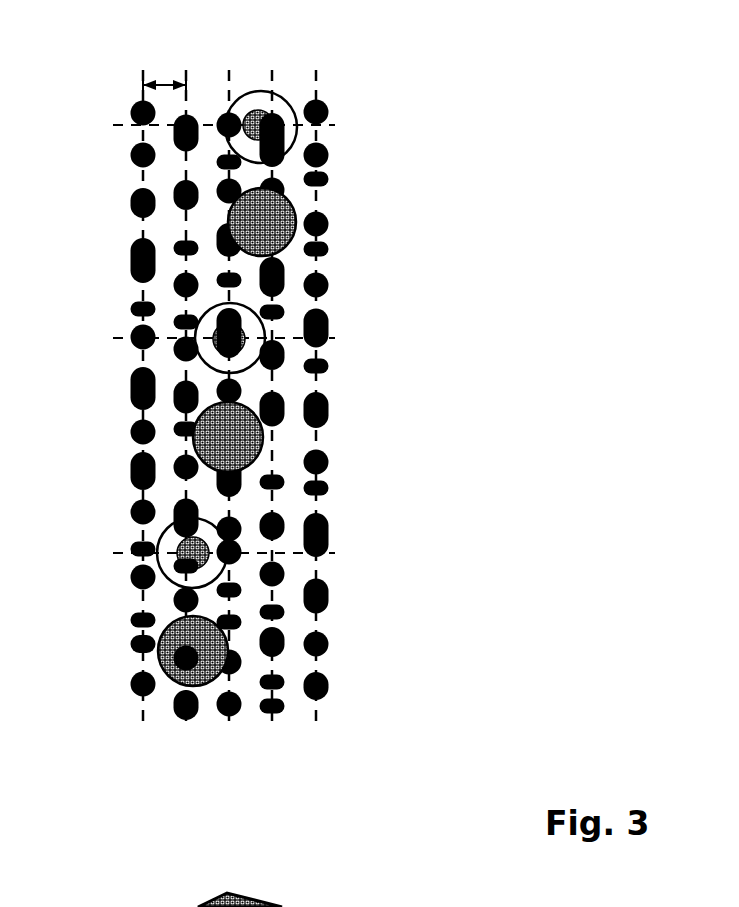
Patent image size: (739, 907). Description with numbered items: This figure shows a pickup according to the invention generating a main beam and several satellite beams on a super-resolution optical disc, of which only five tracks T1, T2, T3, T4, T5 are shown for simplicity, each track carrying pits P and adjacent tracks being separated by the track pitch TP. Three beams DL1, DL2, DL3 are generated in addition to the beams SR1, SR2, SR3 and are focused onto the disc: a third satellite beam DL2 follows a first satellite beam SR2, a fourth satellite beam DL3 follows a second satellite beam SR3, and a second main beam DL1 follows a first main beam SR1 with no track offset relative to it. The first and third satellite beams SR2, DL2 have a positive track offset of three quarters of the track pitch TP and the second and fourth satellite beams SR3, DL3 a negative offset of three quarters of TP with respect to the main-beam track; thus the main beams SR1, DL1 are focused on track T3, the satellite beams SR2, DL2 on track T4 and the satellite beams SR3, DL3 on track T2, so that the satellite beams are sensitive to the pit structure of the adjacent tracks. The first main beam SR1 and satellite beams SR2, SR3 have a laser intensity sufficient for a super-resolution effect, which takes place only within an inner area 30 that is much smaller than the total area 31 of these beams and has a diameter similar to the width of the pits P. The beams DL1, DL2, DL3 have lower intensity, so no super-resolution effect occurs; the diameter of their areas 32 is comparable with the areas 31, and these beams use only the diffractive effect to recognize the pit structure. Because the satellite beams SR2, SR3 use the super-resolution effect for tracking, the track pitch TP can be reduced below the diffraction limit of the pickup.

The track T1 is at (143, 730).
The track T2 is at (187, 730).
The track T3 is at (229, 730).
The track T4 is at (272, 730).
The track T5 is at (316, 730).
The track pitch TP is at (172, 82).
The pit P is at (326, 104).
The first main beam SR1 is at (264, 332).
The first satellite beam SR2 is at (297, 129).
The second satellite beam SR3 is at (227, 548).
The second main beam DL1 is at (263, 437).
The third satellite beam DL2 is at (289, 203).
The fourth satellite beam DL3 is at (227, 645).
The inner area 30 is at (255, 110).
The total area 31 is at (268, 108).
The area 32 is at (165, 660).